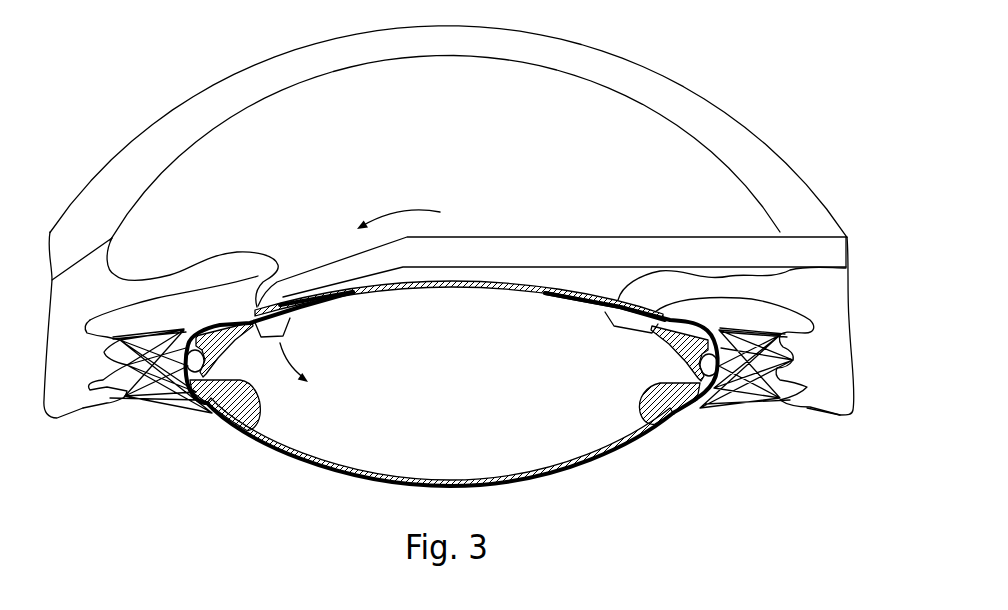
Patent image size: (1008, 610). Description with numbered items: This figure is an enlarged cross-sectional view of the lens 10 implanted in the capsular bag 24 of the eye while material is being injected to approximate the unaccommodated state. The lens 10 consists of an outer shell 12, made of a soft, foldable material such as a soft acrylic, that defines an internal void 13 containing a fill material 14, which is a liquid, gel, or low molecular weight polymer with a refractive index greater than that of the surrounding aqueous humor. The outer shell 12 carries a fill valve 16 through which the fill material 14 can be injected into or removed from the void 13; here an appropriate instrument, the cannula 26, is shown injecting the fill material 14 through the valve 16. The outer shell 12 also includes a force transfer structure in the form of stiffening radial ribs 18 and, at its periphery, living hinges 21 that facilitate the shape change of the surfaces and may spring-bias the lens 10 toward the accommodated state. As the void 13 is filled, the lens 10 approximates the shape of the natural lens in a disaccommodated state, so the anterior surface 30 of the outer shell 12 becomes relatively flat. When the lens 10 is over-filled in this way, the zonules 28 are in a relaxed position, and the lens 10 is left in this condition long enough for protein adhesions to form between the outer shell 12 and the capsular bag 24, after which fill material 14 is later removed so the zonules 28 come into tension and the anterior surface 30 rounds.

The lens 10 is at (452, 332).
The outer shell 12 is at (385, 292).
The internal void 13 is at (513, 458).
The fill material 14 is at (463, 393).
The fill valve 16 is at (290, 333).
The stiffening radial ribs 18 is at (280, 320).
The living hinges 21 is at (210, 367).
The capsular bag 24 is at (277, 453).
The cannula 26 is at (615, 237).
The zonules 28 is at (133, 407).
The anterior surface 30 is at (486, 286).